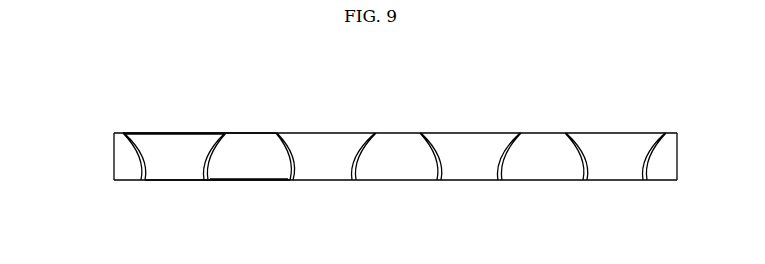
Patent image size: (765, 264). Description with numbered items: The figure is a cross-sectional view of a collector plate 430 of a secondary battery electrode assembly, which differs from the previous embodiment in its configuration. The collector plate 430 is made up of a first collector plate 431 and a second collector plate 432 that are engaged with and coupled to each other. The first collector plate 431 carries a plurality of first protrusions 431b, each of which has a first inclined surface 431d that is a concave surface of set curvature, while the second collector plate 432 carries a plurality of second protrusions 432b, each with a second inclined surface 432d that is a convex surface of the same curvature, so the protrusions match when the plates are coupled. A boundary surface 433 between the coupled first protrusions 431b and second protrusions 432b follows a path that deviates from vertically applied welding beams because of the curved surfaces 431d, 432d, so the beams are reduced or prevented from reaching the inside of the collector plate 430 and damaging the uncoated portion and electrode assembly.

The collector plate 430 is at (89, 101).
The first collector plate 431 is at (173, 126).
The first protrusions 431b is at (153, 142).
The first inclined surface 431d is at (210, 150).
The second collector plate 432 is at (252, 188).
The second protrusions 432b is at (268, 172).
The second inclined surface 432d is at (210, 168).
The boundary surface 433 is at (121, 131).